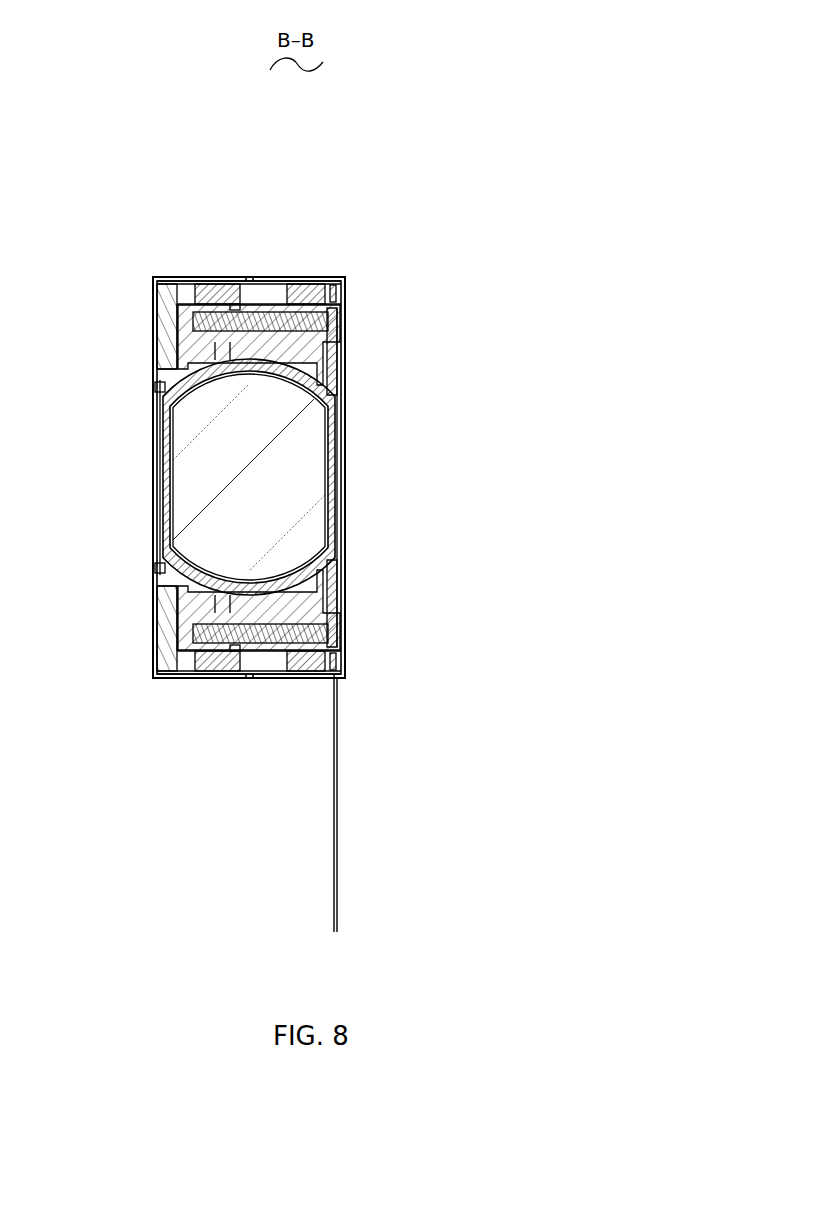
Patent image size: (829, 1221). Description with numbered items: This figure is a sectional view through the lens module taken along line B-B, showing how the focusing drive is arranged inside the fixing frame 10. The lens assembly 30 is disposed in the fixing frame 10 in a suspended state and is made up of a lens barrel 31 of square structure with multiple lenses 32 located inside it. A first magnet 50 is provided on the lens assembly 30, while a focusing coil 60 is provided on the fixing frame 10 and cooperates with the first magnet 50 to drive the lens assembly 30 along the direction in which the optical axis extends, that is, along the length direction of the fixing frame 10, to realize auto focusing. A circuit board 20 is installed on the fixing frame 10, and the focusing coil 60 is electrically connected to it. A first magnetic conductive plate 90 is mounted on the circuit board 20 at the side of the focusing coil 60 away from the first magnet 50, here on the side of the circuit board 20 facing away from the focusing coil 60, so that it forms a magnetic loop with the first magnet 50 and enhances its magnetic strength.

The fixing frame 10 is at (173, 300).
The circuit board 20 is at (337, 750).
The lens assembly 30 is at (470, 353).
The lens barrel 31 is at (328, 393).
The lens 32 is at (310, 495).
The first magnet 50 is at (320, 322).
The focusing coil 60 is at (322, 290).
The first magnetic conductive plate 90 is at (312, 279).